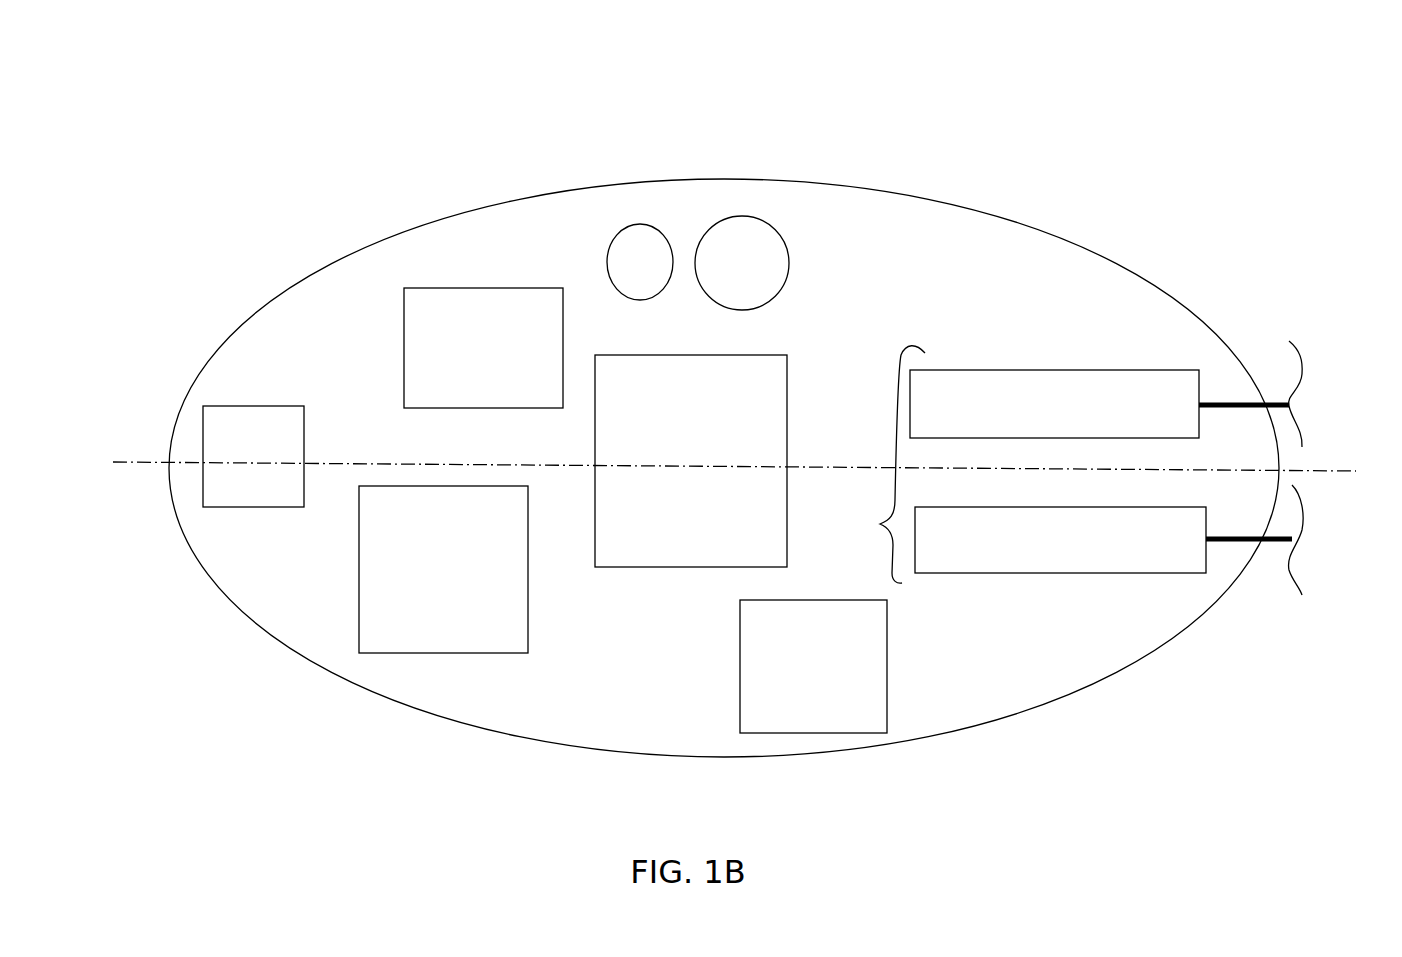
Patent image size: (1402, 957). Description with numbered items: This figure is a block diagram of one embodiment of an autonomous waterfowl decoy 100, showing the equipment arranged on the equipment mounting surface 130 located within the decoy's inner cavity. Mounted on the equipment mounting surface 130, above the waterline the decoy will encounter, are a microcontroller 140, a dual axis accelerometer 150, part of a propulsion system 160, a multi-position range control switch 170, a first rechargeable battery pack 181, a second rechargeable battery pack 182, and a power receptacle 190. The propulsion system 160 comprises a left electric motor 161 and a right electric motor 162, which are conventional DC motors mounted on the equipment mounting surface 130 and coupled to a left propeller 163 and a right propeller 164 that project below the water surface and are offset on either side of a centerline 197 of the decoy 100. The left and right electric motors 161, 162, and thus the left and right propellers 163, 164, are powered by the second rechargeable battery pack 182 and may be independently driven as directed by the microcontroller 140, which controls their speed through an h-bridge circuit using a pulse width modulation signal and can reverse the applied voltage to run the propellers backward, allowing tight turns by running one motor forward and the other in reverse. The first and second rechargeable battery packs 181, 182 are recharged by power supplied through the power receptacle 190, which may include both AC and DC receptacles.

The autonomous waterfowl decoy 100 is at (1013, 172).
The equipment mounting surface 130 is at (934, 303).
The microcontroller 140 is at (426, 619).
The dual axis accelerometer 150 is at (650, 543).
The propulsion system 160 is at (882, 524).
The left electric motor 161 is at (1054, 560).
The right electric motor 162 is at (1033, 383).
The left propeller 163 is at (1307, 579).
The right propeller 164 is at (1304, 374).
The multi-position range control switch 170 is at (247, 428).
The first rechargeable battery pack 181 is at (415, 332).
The second rechargeable battery pack 182 is at (863, 667).
The power receptacle 190 is at (718, 247).
The centerline 197 is at (136, 463).